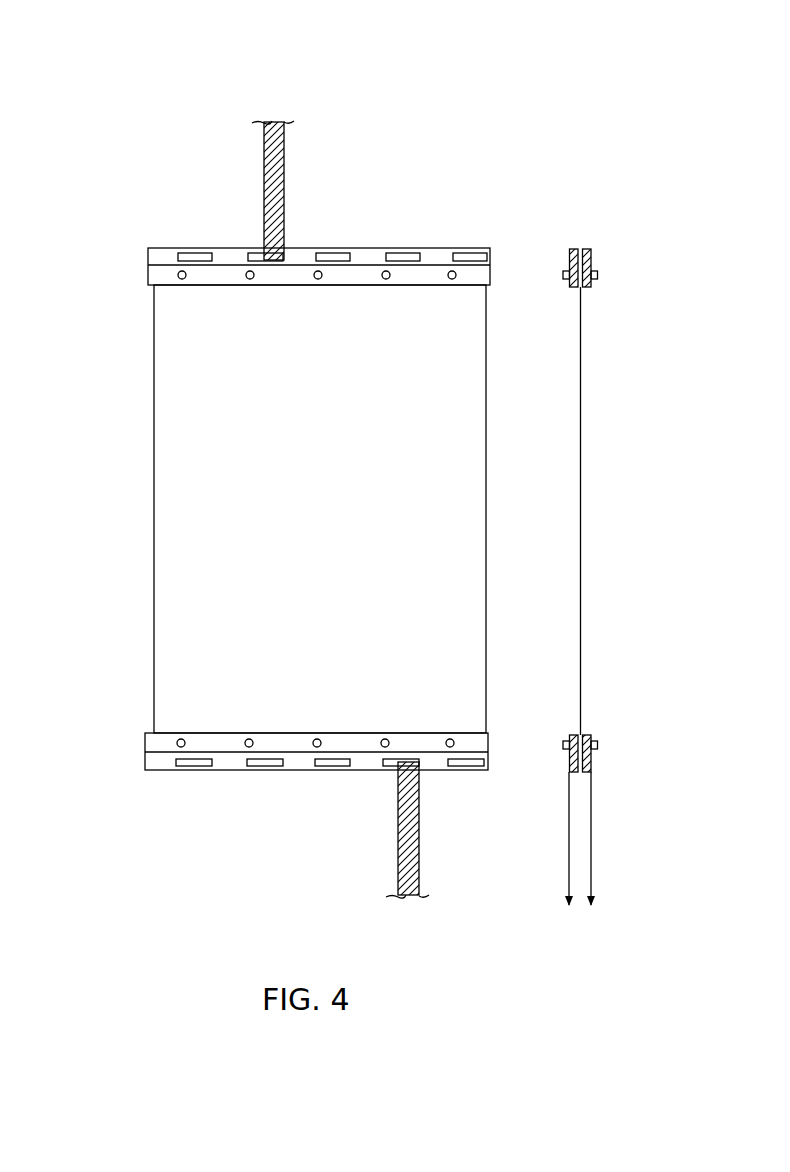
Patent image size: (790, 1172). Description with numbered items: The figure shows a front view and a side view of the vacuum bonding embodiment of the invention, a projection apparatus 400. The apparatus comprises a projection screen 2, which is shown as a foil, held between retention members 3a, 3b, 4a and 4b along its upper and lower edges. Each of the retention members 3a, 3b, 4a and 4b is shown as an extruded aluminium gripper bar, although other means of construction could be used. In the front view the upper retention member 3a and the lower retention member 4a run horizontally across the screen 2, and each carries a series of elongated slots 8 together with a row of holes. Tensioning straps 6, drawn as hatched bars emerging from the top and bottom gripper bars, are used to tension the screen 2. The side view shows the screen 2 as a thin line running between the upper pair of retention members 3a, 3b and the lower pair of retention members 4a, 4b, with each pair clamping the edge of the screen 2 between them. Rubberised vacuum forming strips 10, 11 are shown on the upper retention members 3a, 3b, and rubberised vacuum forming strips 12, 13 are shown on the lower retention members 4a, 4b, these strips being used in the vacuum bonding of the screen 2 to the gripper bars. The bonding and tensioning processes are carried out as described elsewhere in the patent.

The projection apparatus 400 is at (126, 96).
The projection screen 2 is at (154, 481).
The retention member 3a is at (490, 260).
The retention member 3b is at (590, 248).
The retention member 4a is at (474, 744).
The retention member 4b is at (584, 736).
The tensioning strap 6 is at (268, 177).
The elongated slot 8 is at (403, 257).
The rubberised vacuum forming strip 10 is at (575, 287).
The rubberised vacuum forming strip 11 is at (590, 287).
The rubberised vacuum forming strip 12 is at (570, 762).
The rubberised vacuum forming strip 13 is at (592, 762).